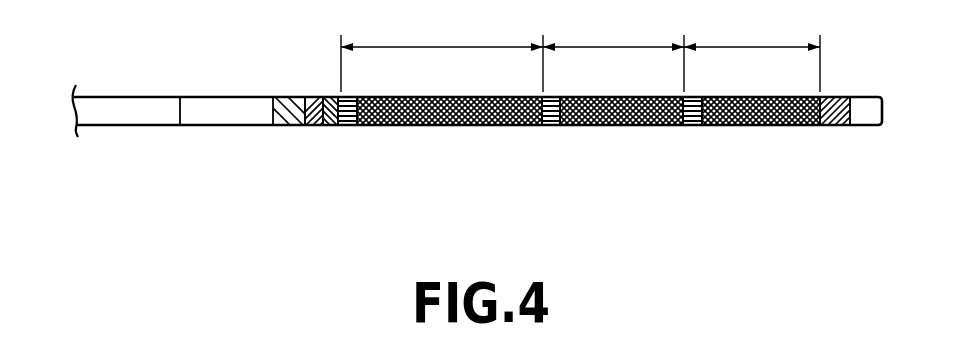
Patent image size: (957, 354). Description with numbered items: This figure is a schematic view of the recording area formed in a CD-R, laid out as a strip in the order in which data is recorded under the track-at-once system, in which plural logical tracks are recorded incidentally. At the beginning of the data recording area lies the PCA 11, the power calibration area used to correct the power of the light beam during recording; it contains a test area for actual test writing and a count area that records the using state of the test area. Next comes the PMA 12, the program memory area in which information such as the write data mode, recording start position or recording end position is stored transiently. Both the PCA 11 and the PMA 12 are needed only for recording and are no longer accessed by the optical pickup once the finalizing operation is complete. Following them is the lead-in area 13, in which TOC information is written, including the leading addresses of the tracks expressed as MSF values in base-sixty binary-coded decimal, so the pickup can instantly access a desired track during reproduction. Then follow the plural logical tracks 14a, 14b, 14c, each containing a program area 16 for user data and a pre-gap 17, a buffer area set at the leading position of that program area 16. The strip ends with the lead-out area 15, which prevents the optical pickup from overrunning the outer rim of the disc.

The PCA (power calibration area) 11 is at (283, 127).
The PMA (program memory area) 12 is at (313, 127).
The lead-in area 13 is at (329, 127).
The logical track 14a is at (442, 53).
The logical track 14b is at (613, 53).
The logical track 14c is at (752, 53).
The lead-out area 15 is at (833, 127).
The program area 16 is at (453, 127).
The pre-gap 17 is at (347, 127).